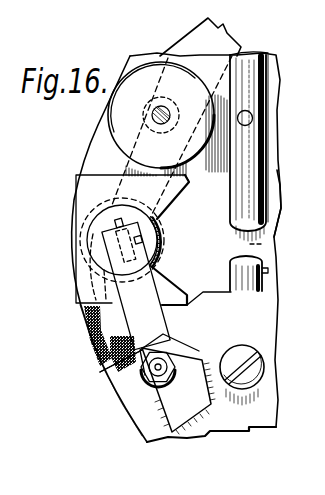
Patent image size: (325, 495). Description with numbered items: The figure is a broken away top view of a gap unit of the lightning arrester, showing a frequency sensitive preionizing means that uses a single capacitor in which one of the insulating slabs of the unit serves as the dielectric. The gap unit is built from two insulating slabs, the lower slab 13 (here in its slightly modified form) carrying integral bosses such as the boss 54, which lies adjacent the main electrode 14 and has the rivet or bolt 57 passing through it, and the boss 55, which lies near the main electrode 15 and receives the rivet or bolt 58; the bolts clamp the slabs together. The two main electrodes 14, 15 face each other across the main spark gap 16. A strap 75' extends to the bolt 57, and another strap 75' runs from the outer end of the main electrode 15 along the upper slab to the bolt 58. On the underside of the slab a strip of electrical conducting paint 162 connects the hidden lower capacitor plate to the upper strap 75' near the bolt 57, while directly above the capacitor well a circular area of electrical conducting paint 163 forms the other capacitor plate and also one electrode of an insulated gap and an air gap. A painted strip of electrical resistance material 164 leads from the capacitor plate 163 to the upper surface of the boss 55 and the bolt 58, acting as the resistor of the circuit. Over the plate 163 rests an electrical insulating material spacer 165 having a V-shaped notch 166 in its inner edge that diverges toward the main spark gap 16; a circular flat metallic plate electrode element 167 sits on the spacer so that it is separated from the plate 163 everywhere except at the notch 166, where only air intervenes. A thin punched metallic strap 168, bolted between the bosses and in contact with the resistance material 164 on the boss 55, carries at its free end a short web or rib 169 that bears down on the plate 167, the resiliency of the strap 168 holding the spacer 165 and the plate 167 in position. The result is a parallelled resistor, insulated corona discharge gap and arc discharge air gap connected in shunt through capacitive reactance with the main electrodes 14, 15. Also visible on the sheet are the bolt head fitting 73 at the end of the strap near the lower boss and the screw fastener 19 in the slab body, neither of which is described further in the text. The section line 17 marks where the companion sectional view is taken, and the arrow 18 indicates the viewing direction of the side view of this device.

The insulating slab 13 is at (280, 209).
The main electrode 14 is at (268, 162).
The main electrode 15 is at (268, 270).
The main spark gap 16 is at (266, 243).
The section line 17 is at (45, 274).
The viewing arrow 18 is at (253, 118).
The screw 19 is at (266, 378).
The boss 54 is at (173, 63).
The boss 55 is at (93, 366).
The rivet or bolt 57 is at (157, 103).
The rivet or bolt 58 is at (150, 396).
The plate 73 is at (191, 352).
The strap 75' is at (205, 224).
The strip of electrical conducting paint 162 is at (128, 169).
The electrical conducting paint 163 is at (157, 221).
The strip of electrical resistance material 164 is at (89, 346).
The electrical insulating material spacer 165 is at (76, 198).
The V-shaped notch 166 is at (183, 275).
The flat metallic plate electrode element 167 is at (165, 245).
The strap 168 is at (136, 285).
The web or rib 169 is at (116, 218).